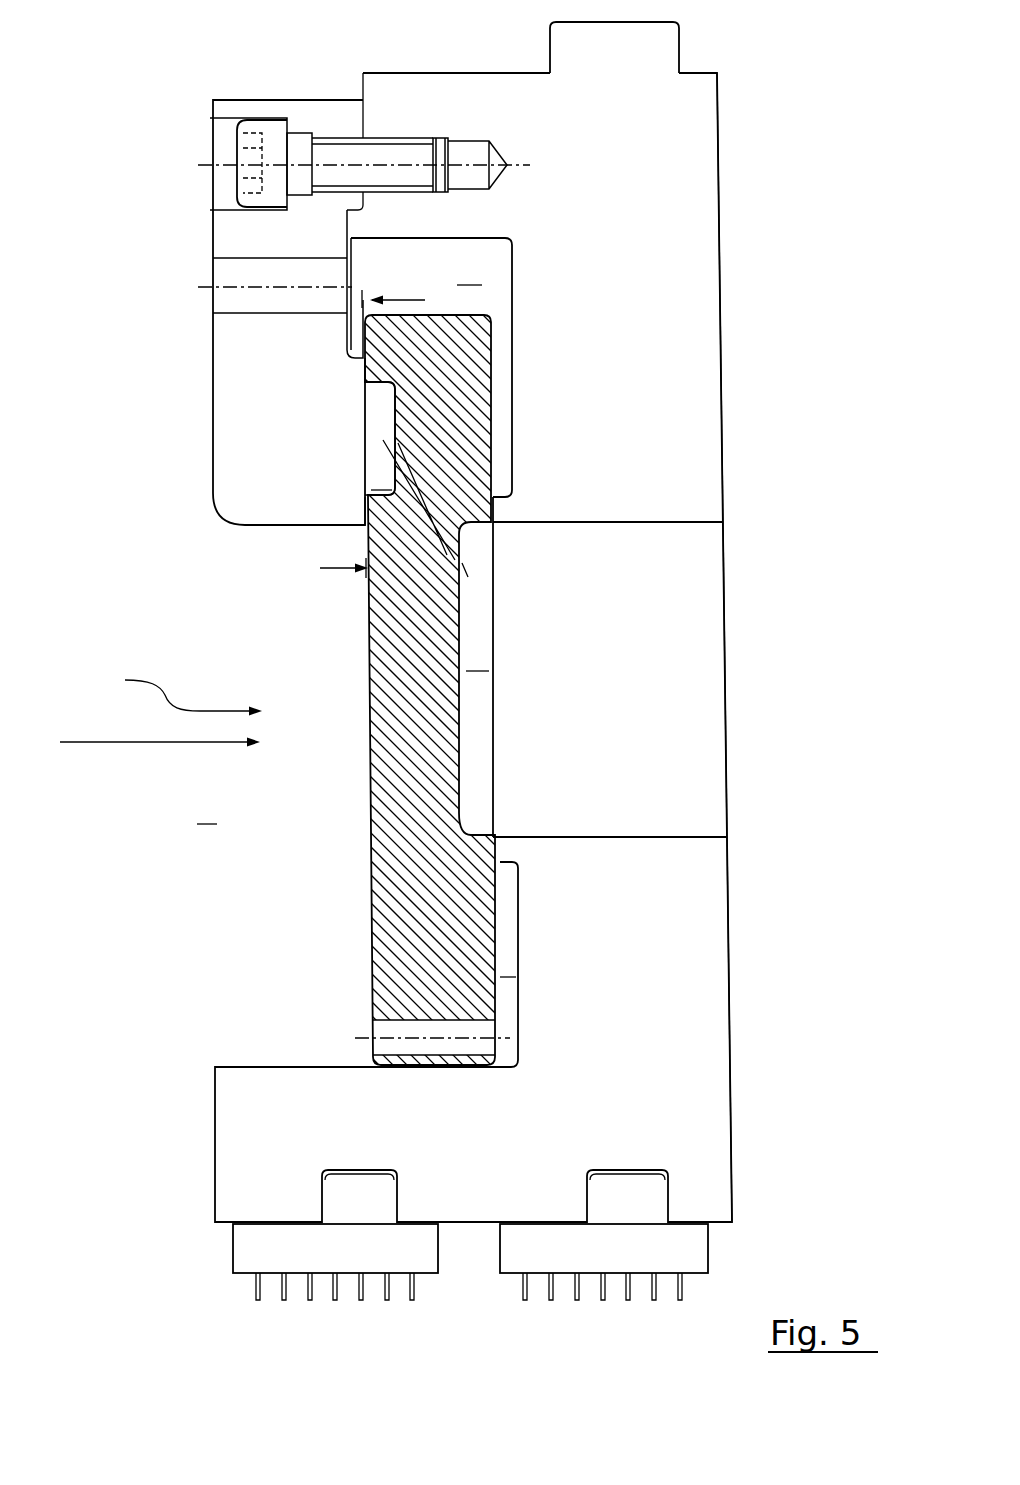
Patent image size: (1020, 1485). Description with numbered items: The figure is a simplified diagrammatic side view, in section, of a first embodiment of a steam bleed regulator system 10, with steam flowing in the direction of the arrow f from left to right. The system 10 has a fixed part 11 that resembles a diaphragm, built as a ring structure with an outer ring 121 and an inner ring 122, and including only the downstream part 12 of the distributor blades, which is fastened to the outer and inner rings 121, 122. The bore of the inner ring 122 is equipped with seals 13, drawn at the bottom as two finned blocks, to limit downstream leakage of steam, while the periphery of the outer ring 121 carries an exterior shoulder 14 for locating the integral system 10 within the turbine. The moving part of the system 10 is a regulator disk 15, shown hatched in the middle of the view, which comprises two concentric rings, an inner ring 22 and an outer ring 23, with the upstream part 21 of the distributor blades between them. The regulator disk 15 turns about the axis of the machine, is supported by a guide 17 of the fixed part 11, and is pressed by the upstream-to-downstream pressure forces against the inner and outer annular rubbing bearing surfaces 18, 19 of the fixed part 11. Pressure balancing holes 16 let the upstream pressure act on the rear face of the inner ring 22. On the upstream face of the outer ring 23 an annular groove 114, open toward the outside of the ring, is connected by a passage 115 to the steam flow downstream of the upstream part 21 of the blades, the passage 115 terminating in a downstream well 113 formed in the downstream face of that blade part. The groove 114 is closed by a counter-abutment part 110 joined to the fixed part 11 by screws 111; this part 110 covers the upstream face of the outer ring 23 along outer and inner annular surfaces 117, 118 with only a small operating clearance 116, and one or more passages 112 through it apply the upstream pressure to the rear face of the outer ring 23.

The steam bleed regulator system 10 is at (172, 693).
The fixed part 11 is at (735, 218).
The downstream part of the distributor blades 12 is at (605, 754).
The seals 13 is at (305, 1247).
The exterior shoulder 14 is at (617, 47).
The regulator disk 15 is at (510, 742).
The pressure balancing holes 16 is at (410, 1032).
The guide 17 is at (431, 1080).
The inner annular rubbing bearing surface 18 is at (512, 508).
The outer annular rubbing bearing surface 19 is at (515, 848).
The upstream part of the distributor blades 21 is at (403, 675).
The inner ring 22 is at (410, 932).
The outer ring 23 is at (455, 406).
The counter-abutment part 110 is at (287, 481).
The screws 111 is at (260, 163).
The passages 112 is at (281, 286).
The downstream well 113 is at (478, 693).
The annular groove 114 is at (380, 428).
The passage 115 is at (413, 488).
The operating clearance 116 is at (361, 436).
The outer annular surface 117 is at (352, 374).
The inner annular surface 118 is at (352, 509).
The outer ring 121 is at (637, 342).
The inner ring 122 is at (615, 1008).
The arrow indicating steam flow direction f is at (138, 743).